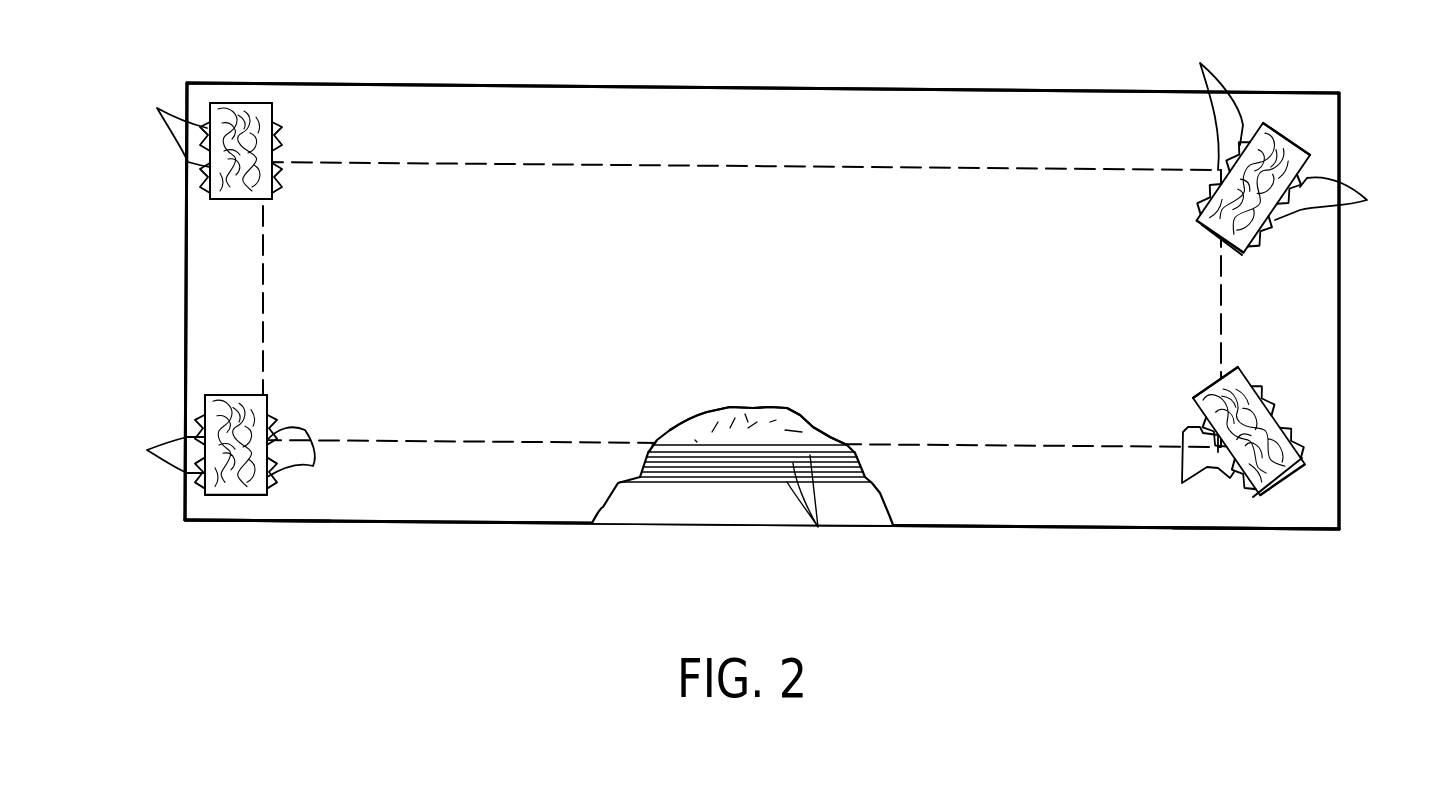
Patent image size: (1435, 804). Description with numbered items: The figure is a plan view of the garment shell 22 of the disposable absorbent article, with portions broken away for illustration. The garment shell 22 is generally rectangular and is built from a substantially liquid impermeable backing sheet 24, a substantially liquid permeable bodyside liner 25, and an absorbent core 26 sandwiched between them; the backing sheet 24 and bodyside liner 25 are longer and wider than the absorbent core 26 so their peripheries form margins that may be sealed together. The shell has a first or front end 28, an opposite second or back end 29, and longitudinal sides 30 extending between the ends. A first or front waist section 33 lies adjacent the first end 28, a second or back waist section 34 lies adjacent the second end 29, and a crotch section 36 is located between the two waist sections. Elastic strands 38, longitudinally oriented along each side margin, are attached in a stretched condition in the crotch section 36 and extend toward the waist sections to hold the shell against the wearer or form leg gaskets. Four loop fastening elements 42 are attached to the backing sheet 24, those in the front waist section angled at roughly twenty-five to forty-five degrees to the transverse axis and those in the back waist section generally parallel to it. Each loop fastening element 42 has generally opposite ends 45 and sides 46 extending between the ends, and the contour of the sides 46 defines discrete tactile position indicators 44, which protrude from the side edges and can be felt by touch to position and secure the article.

The garment shell 22 is at (508, 62).
The backing sheet 24 is at (516, 324).
The bodyside liner 25 is at (665, 502).
The absorbent core 26 is at (749, 408).
The first end 28 is at (1347, 300).
The second end 29 is at (185, 270).
The longitudinal sides 30 is at (850, 88).
The first waist section 33 is at (1160, 568).
The second waist section 34 is at (343, 545).
The crotch section 36 is at (704, 182).
The elastic strands 38 is at (818, 527).
The loop fastening elements 42 is at (236, 103).
The tactile position indicators 44 is at (756, 276).
The ends 45 is at (230, 199).
The sides 46 is at (272, 112).